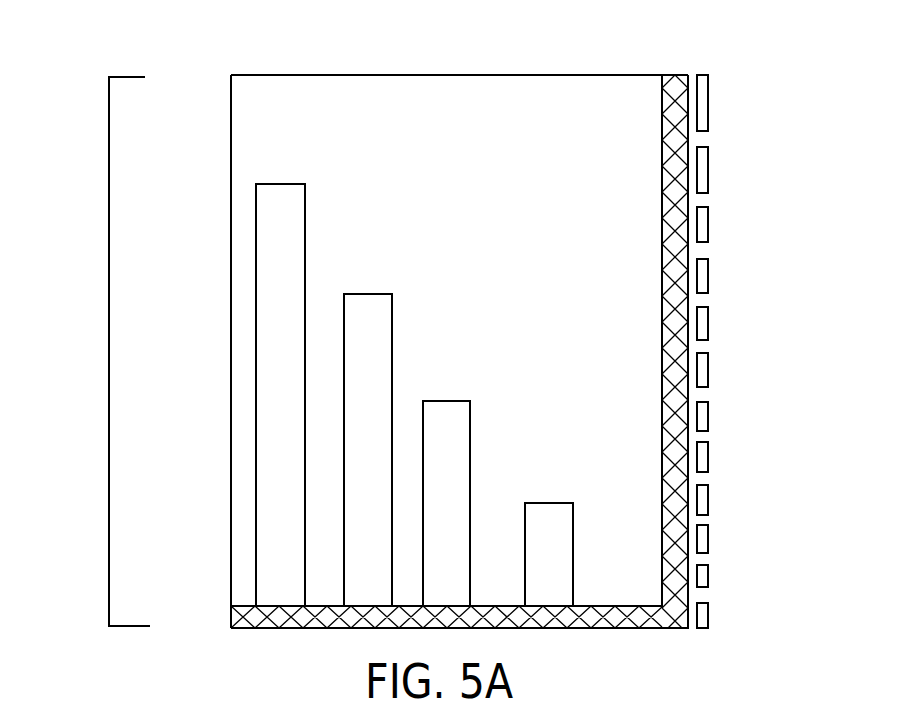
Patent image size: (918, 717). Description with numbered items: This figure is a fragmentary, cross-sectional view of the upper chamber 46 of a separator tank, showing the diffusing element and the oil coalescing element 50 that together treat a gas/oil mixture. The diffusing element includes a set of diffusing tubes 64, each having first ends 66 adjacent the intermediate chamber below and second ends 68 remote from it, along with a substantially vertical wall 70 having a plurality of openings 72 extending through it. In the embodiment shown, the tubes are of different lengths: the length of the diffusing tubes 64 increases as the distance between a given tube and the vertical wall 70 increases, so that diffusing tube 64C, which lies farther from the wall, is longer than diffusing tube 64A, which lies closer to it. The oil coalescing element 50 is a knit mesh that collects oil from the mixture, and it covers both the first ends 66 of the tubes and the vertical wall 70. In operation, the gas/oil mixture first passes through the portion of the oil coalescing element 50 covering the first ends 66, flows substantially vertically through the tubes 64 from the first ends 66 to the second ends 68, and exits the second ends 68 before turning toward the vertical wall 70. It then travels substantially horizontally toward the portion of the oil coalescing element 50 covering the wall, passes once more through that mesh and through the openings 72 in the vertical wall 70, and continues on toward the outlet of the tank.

The upper chamber 46 is at (109, 353).
The oil coalescing element 50 is at (687, 75).
The diffusing tubes 64 is at (404, 387).
The diffusing tube 64A is at (562, 560).
The diffusing tube 64C is at (367, 392).
The first ends 66 is at (277, 597).
The second ends 68 is at (278, 207).
The vertical wall 70 is at (703, 168).
The openings 72 is at (782, 351).